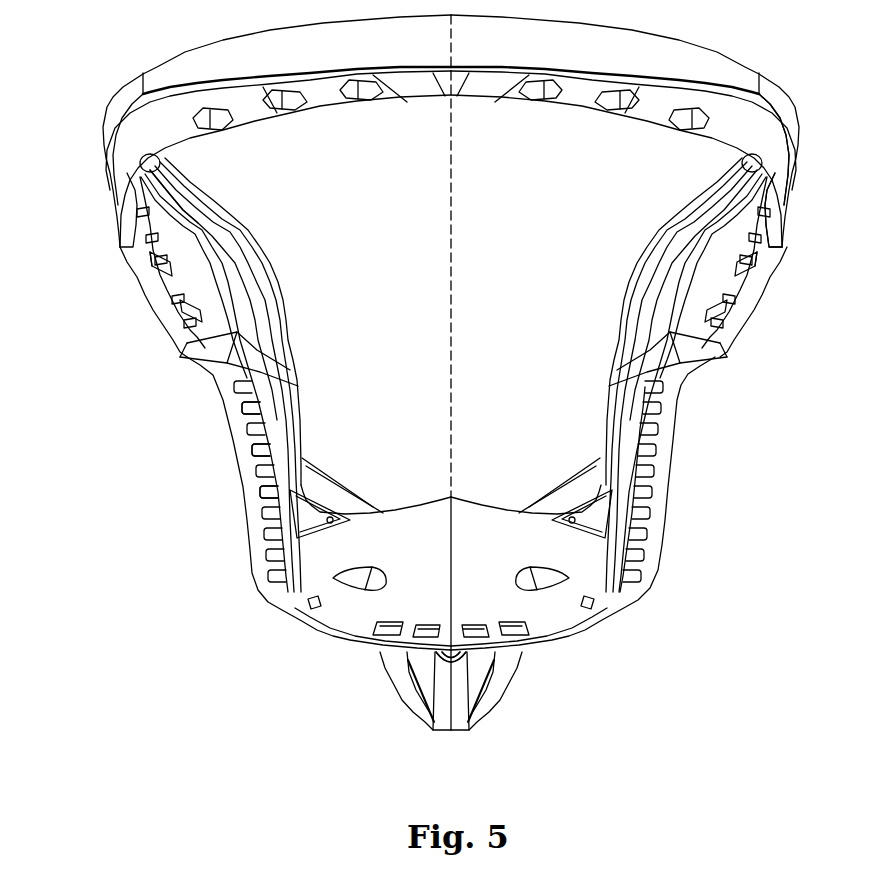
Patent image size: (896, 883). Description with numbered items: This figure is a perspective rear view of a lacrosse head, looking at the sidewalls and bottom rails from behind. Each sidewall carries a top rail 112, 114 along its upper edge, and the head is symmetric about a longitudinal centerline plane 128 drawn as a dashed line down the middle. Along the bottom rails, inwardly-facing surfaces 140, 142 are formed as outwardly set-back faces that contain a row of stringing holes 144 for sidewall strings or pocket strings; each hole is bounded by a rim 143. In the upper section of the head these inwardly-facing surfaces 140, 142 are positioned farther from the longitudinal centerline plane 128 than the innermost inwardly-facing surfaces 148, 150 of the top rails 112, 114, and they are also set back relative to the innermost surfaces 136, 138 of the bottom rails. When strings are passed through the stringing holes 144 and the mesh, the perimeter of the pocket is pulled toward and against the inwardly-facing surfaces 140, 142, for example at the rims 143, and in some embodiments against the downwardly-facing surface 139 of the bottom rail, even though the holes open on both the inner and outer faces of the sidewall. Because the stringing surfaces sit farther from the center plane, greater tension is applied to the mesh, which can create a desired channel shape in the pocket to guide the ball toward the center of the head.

The top rail 112 is at (750, 180).
The top rail 114 is at (192, 202).
The longitudinal centerline plane 128 is at (452, 152).
The innermost surface of bottom rail 136 is at (692, 293).
The innermost surface of bottom rail 138 is at (213, 308).
The downwardly-facing surface 139 is at (247, 480).
The inwardly-facing surface 140 is at (733, 292).
The inwardly-facing surface 142 is at (168, 292).
The rim 143 is at (180, 312).
The stringing hole 144 is at (167, 265).
The innermost inwardly-facing surface of top rail 148 is at (687, 198).
The innermost inwardly-facing surface of top rail 150 is at (217, 215).